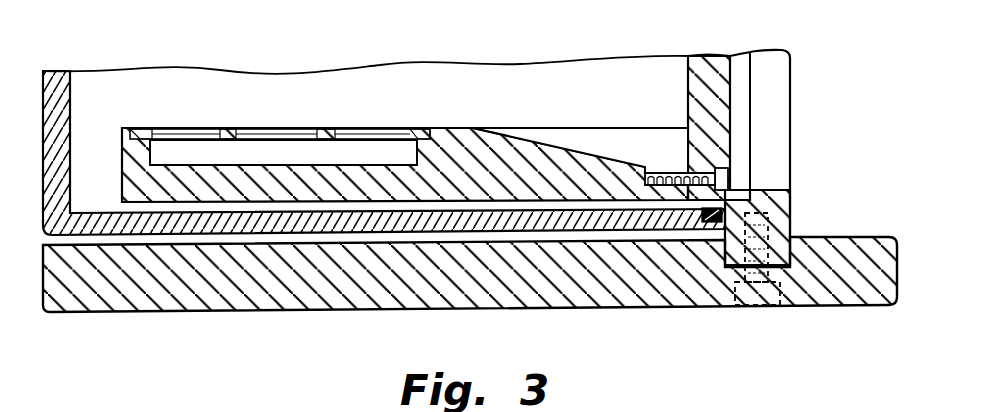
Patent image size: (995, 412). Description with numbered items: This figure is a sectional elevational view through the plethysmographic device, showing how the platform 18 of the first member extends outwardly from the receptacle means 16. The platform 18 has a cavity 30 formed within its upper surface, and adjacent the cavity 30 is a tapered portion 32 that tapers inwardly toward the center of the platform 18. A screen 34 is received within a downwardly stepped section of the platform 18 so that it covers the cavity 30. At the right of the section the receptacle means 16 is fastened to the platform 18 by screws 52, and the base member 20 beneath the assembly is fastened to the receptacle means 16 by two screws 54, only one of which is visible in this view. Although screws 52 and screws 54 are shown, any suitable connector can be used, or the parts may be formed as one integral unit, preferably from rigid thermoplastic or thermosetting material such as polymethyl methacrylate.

The receptacle means 16 is at (768, 77).
The platform 18 is at (445, 143).
The base member 20 is at (855, 258).
The cavity 30 is at (205, 150).
The tapered portion 32 is at (625, 138).
The screen 34 is at (330, 130).
The screws 52 is at (722, 181).
The screws 54 is at (752, 300).